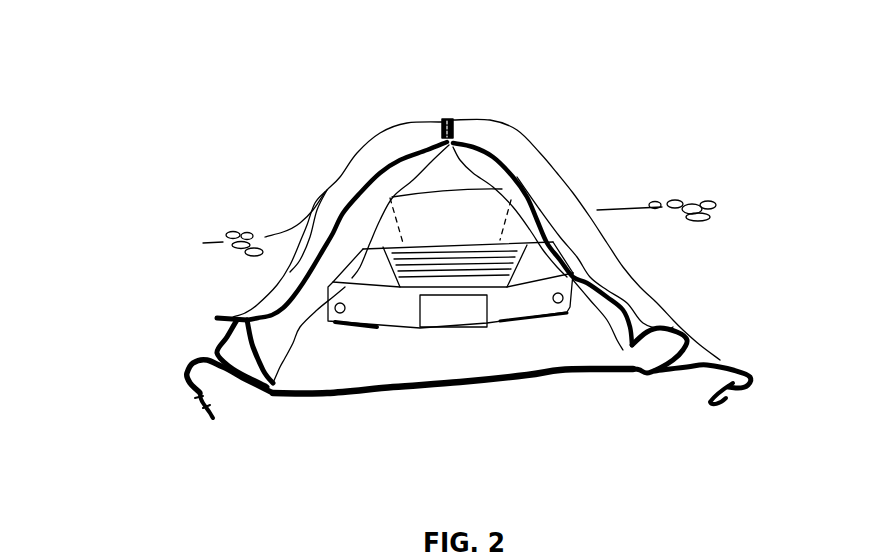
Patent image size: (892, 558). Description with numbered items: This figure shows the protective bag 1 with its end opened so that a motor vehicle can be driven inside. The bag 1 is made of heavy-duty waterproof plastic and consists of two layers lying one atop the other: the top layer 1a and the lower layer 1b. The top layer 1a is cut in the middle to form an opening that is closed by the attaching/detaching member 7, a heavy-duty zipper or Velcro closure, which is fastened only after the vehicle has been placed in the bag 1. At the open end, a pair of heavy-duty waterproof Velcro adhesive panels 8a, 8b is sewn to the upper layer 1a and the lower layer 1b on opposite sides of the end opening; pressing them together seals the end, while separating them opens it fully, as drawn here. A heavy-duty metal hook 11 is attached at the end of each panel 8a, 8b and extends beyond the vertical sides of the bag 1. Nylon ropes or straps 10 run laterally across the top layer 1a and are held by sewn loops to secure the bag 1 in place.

The protective bag 1 is at (632, 111).
The top layer 1a is at (543, 174).
The lower layer 1b is at (413, 363).
The attaching/detaching member 7 is at (452, 117).
The adhesive panel 8a is at (233, 317).
The adhesive panel 8b is at (333, 400).
The ropes or straps 10 is at (647, 201).
The metal hook 11 is at (210, 423).